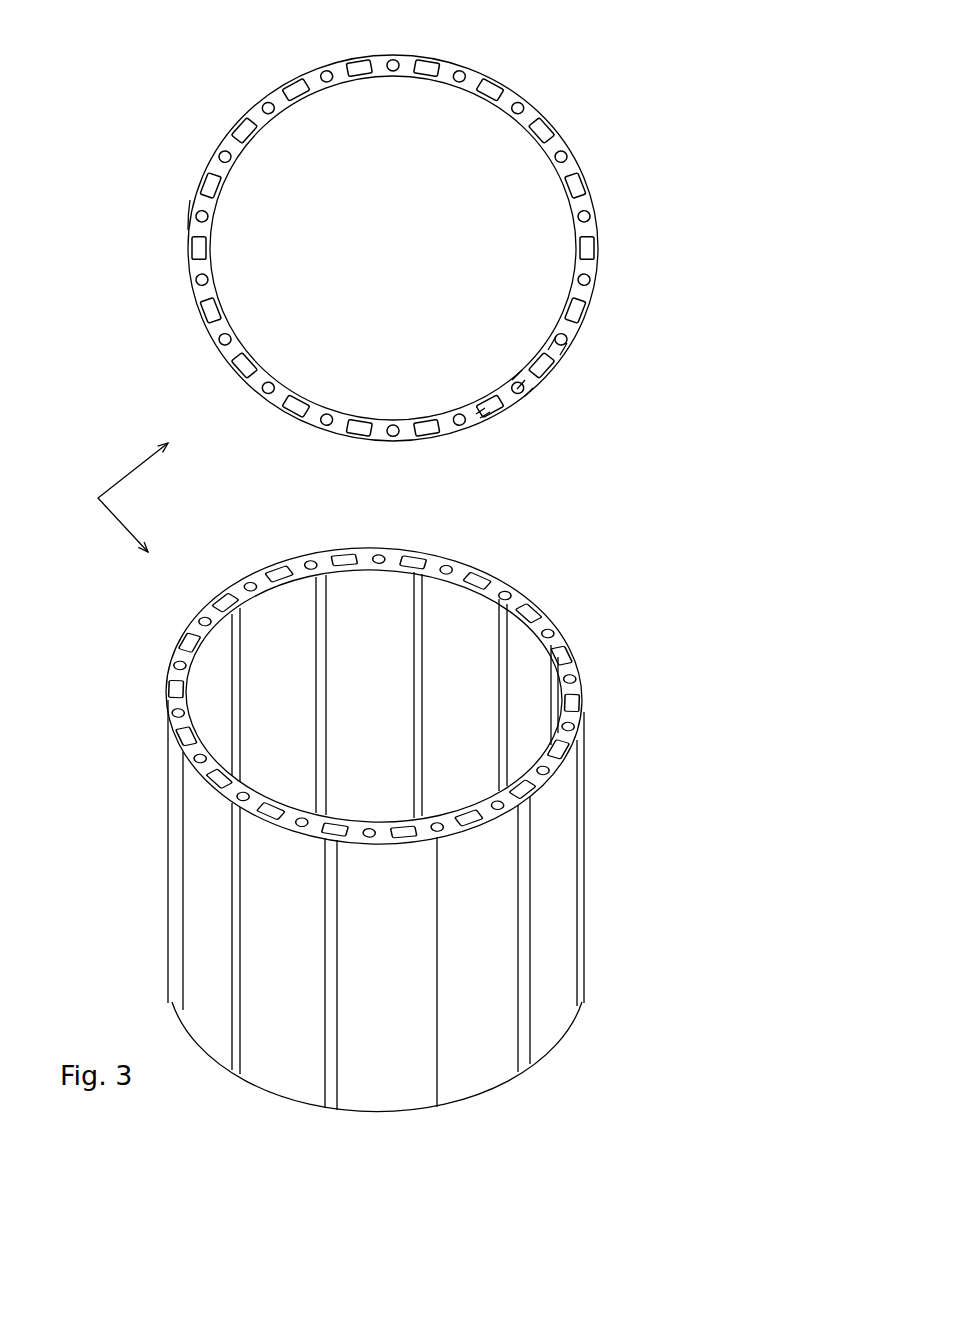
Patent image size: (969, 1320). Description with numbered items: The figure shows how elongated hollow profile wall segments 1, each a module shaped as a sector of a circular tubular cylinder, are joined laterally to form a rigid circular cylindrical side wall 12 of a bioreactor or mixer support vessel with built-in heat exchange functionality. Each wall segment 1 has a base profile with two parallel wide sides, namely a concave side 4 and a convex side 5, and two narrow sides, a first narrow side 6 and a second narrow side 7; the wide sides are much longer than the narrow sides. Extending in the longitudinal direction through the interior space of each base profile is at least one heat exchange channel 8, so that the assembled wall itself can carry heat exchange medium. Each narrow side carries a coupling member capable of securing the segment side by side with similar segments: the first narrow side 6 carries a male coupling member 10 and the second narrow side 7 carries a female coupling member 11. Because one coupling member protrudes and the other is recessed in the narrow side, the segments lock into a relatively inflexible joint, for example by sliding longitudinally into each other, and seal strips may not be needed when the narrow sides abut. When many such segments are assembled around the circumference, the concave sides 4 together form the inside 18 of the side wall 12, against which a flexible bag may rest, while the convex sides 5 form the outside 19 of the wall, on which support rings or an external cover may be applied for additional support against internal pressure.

The hollow profile wall segment 1 is at (505, 407).
The concave wide side 4 is at (522, 370).
The convex wide side 5 is at (533, 388).
The first narrow side 6 is at (557, 338).
The second narrow side 7 is at (490, 412).
The heat exchange channel 8 is at (525, 380).
The male coupling member 10 is at (567, 343).
The female coupling member 11 is at (485, 408).
The side wall 12 is at (111, 497).
The inside of the wall 18 is at (200, 289).
The outside of the wall 19 is at (207, 168).